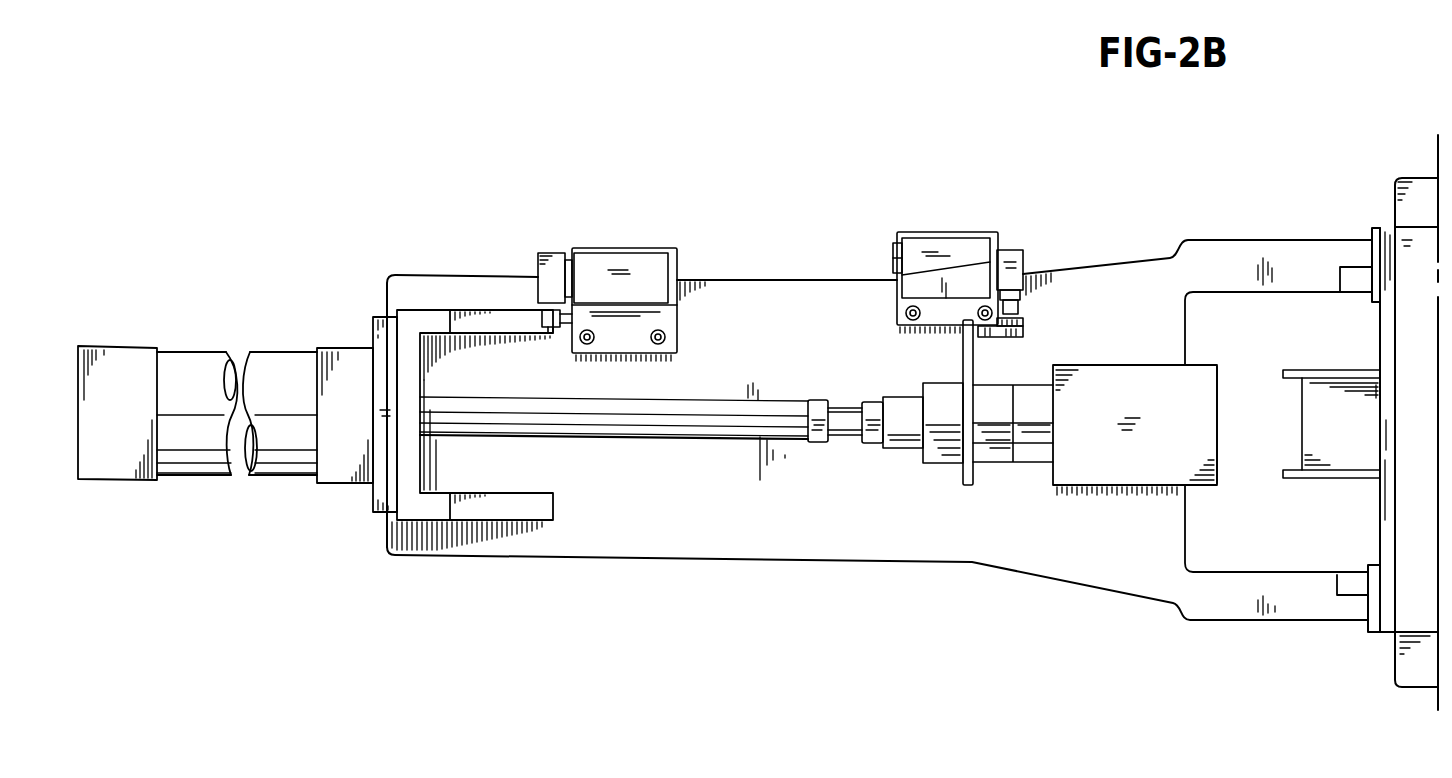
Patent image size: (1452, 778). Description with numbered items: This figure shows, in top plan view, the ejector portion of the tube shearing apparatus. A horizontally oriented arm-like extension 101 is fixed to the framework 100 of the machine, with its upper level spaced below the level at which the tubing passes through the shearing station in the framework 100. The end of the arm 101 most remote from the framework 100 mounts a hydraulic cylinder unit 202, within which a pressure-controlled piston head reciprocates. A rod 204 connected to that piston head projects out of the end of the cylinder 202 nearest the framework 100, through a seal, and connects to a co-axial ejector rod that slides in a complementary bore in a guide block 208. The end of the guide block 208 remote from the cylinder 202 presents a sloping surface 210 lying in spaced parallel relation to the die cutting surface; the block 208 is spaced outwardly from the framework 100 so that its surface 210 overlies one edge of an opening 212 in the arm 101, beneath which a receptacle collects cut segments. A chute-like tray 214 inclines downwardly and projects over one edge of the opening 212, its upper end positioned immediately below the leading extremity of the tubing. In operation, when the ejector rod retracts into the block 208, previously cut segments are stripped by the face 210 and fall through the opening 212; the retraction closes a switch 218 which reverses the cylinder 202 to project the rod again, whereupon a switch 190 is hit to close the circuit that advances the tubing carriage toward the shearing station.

The framework 100 is at (1411, 176).
The arm-like extension 101 is at (778, 550).
The switch 190 is at (947, 243).
The hydraulic cylinder unit 202 is at (287, 394).
The rod 204 is at (697, 442).
The guide block 208 is at (1132, 378).
The sloping surface 210 is at (1222, 406).
The opening 212 is at (1190, 489).
The chute-like tray 214 is at (1362, 429).
The switch 218 is at (634, 257).